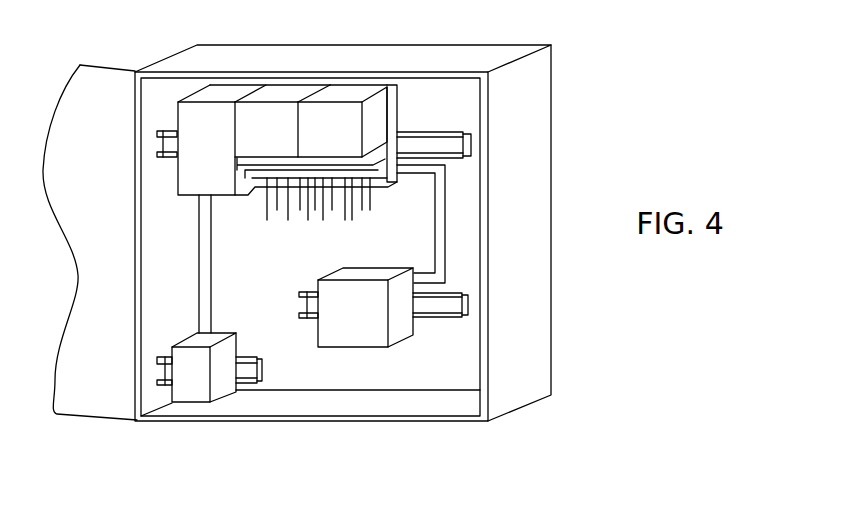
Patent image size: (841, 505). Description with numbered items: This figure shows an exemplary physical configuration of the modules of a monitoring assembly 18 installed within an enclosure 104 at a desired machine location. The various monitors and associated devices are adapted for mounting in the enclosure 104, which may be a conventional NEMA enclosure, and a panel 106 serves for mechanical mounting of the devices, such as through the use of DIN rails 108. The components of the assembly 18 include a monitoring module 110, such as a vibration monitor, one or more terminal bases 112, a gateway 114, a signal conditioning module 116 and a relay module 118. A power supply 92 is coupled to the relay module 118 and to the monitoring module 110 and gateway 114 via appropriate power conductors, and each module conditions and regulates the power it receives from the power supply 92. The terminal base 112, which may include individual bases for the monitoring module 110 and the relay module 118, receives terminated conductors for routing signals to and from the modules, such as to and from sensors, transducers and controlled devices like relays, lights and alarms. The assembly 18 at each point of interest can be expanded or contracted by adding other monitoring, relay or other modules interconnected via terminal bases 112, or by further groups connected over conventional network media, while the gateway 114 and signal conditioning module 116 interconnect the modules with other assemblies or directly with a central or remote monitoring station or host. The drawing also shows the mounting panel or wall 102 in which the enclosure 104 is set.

The assembly 18 is at (574, 130).
The power supply 92 is at (402, 328).
The mounting panel 102 is at (688, 0).
The enclosure 104 is at (535, 80).
The panel 106 is at (468, 273).
The DIN rails 108 is at (457, 147).
The monitoring module 110 is at (265, 118).
The terminal base 112 is at (393, 107).
The gateway 114 is at (192, 172).
The signal conditioning module 116 is at (189, 393).
The relay module 118 is at (333, 113).